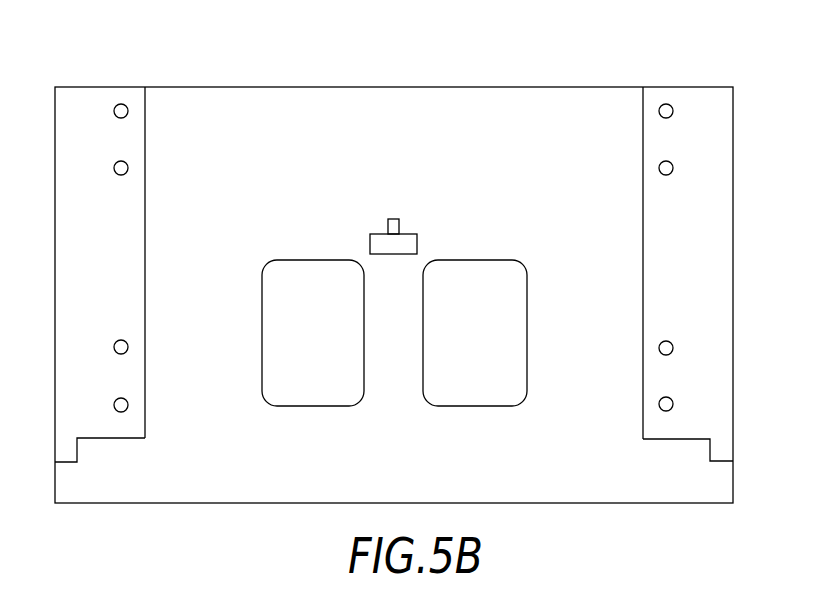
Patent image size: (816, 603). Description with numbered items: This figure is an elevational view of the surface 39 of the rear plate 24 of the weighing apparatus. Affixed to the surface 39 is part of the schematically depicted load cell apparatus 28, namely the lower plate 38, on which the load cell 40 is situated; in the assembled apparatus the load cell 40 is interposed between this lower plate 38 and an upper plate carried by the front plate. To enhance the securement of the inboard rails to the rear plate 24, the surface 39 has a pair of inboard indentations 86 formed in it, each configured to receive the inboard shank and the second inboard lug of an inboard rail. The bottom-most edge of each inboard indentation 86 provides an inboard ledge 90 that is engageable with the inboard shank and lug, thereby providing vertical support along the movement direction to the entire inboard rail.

The rear plate 24 is at (478, 87).
The surface of the rear plate 39 is at (200, 106).
The inboard indentations 86 is at (658, 266).
The inboard ledge 90 is at (127, 438).
The load cell apparatus 28 is at (387, 199).
The lower plate 38 is at (417, 241).
The load cell 40 is at (385, 205).